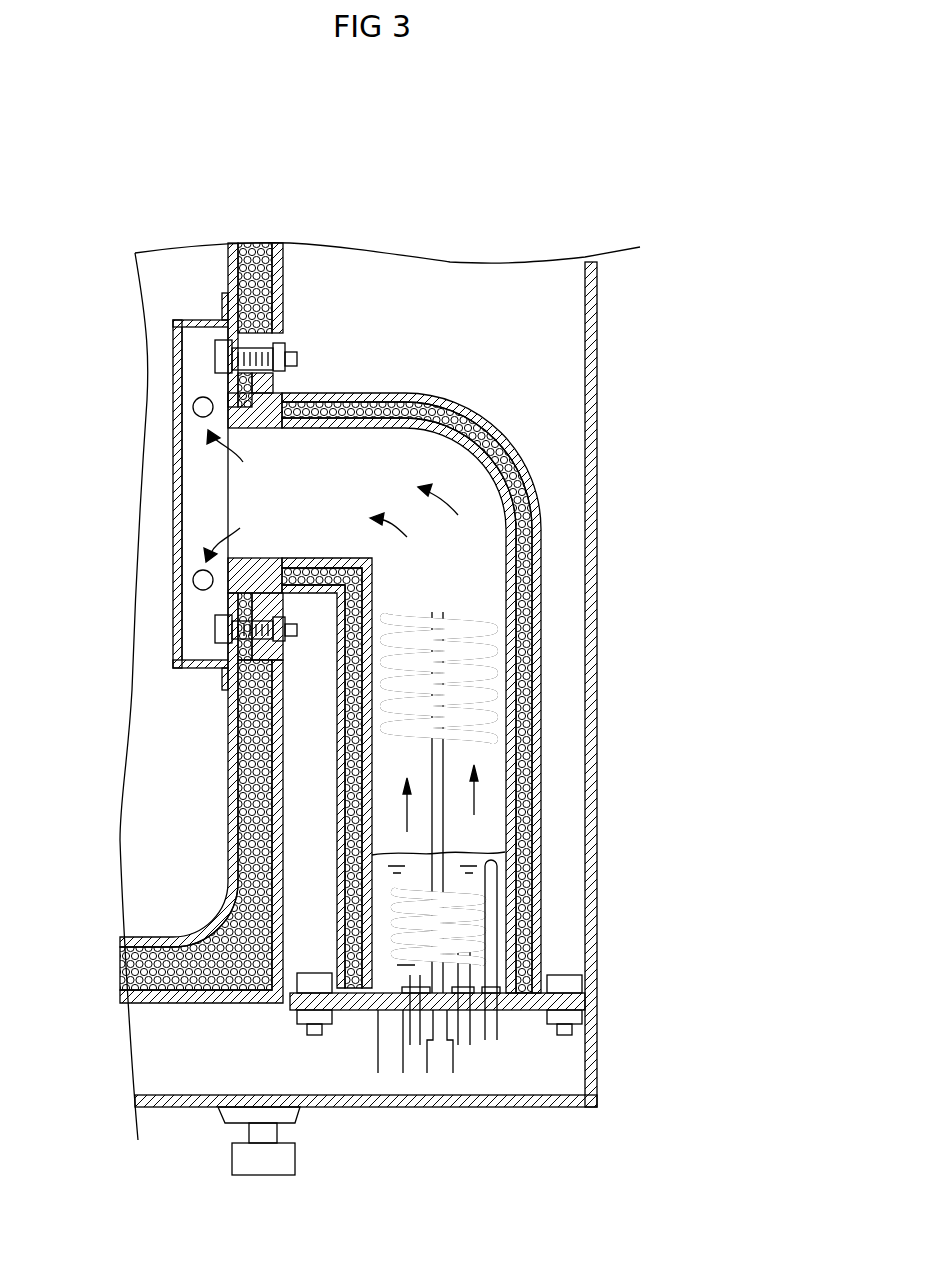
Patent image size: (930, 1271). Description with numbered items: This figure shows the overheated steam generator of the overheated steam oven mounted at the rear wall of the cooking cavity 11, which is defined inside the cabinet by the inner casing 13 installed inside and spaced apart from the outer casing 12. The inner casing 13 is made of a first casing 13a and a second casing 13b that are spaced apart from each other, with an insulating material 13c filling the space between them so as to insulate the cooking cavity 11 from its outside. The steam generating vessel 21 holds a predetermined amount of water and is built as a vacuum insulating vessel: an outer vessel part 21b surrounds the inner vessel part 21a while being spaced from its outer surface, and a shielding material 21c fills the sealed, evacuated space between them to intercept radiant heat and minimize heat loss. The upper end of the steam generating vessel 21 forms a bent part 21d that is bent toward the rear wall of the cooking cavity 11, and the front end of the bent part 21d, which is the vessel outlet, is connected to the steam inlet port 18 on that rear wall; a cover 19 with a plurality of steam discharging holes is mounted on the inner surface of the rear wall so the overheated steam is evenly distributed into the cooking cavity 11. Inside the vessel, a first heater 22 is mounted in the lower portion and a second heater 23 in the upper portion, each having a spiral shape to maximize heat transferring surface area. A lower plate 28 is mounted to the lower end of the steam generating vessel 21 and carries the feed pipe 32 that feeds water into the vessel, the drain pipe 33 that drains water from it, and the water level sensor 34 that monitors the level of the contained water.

The cooking cavity 11 is at (191, 746).
The outer casing 12 is at (597, 321).
The inner casing 13 is at (234, 574).
The first casing 13a is at (233, 243).
The second casing 13b is at (280, 243).
The insulating material 13c is at (253, 243).
The steam inlet port 18 is at (240, 528).
The cover 19 is at (175, 351).
The steam generating vessel 21 is at (470, 661).
The inner vessel part 21a is at (510, 560).
The outer vessel part 21b is at (530, 598).
The shielding material 21c is at (528, 682).
The bent part 21d is at (372, 393).
The first heater 22 is at (478, 890).
The second heater 23 is at (488, 725).
The lower plate 28 is at (525, 1010).
The feed pipe 32 is at (447, 1057).
The drain pipe 33 is at (388, 1063).
The water level sensor 34 is at (492, 862).